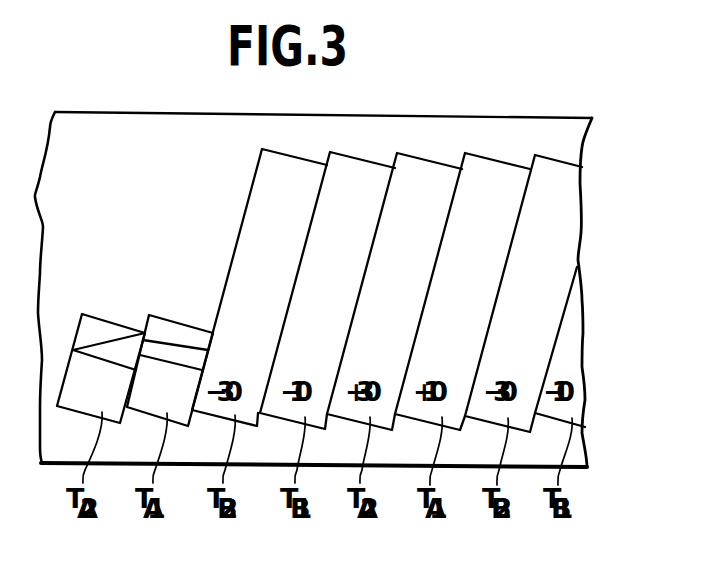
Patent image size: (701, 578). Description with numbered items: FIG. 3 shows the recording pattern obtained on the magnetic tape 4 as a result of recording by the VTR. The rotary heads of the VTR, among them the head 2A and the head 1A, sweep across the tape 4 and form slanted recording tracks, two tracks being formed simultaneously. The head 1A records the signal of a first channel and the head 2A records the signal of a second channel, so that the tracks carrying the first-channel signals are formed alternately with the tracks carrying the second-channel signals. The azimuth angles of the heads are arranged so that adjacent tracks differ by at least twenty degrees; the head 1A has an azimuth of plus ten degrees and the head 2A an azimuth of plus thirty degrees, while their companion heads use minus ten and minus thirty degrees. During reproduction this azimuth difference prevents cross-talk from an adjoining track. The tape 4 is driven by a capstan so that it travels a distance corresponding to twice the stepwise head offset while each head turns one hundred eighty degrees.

The magnetic tape 4 is at (557, 124).
The head 2A is at (103, 323).
The head 1A is at (178, 325).